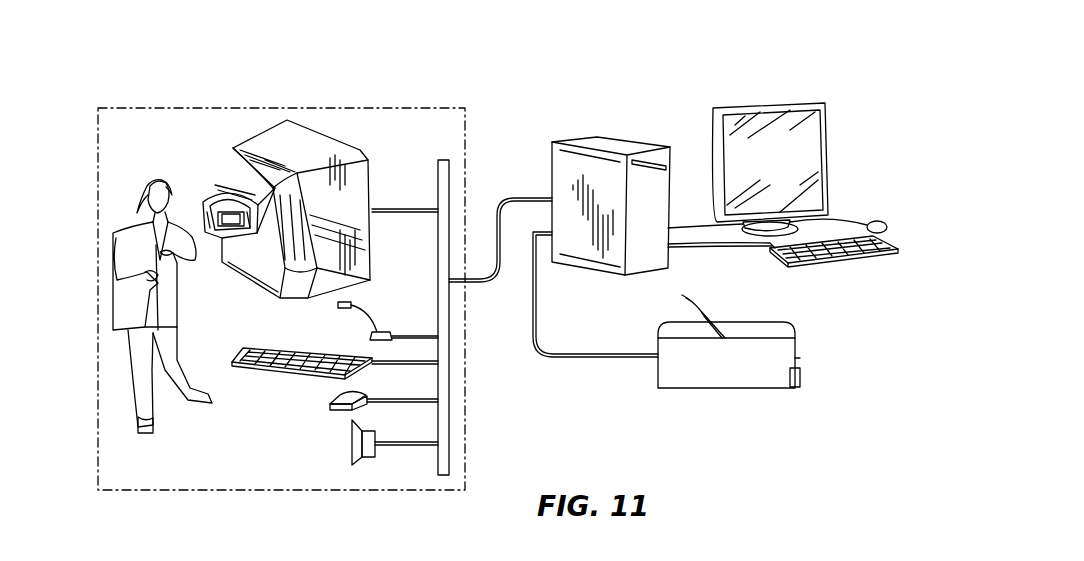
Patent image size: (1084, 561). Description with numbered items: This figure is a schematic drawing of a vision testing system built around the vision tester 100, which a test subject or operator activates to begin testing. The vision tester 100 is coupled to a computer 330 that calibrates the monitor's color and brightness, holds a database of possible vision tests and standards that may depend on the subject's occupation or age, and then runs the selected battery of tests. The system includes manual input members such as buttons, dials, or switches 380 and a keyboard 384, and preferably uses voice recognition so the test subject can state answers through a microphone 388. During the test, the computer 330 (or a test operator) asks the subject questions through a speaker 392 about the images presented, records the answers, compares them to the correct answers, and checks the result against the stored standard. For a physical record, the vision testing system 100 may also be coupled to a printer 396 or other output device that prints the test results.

The vision tester 100 is at (268, 92).
The computer 330 is at (638, 141).
The switches 380 is at (332, 393).
The keyboard 384 is at (252, 346).
The microphone 388 is at (347, 298).
The speaker 392 is at (352, 442).
The printer 396 is at (693, 390).